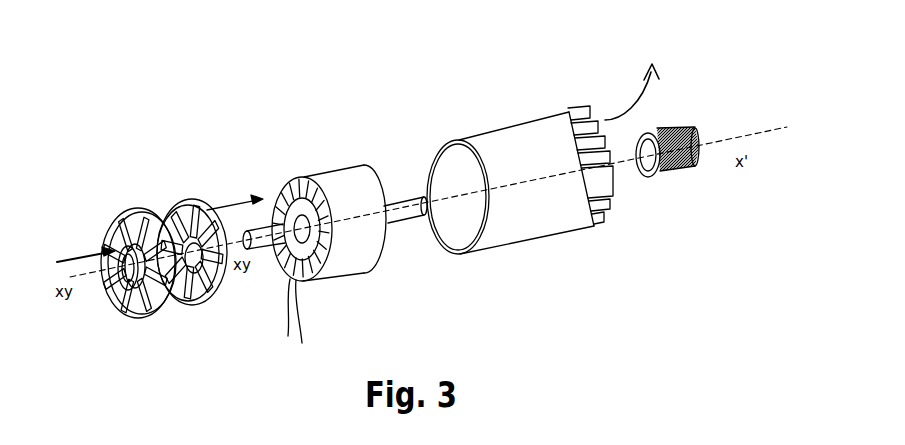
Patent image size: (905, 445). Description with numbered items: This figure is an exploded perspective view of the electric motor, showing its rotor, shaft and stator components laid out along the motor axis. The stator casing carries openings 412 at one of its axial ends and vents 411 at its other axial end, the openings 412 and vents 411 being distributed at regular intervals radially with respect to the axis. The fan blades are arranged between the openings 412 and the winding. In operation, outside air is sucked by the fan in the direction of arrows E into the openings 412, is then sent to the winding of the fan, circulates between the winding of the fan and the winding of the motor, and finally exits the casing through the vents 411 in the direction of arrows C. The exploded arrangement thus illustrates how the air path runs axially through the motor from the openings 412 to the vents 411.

The vents 411 is at (608, 207).
The openings 412 is at (121, 302).
The arrows E is at (86, 248).
The arrows C is at (635, 92).